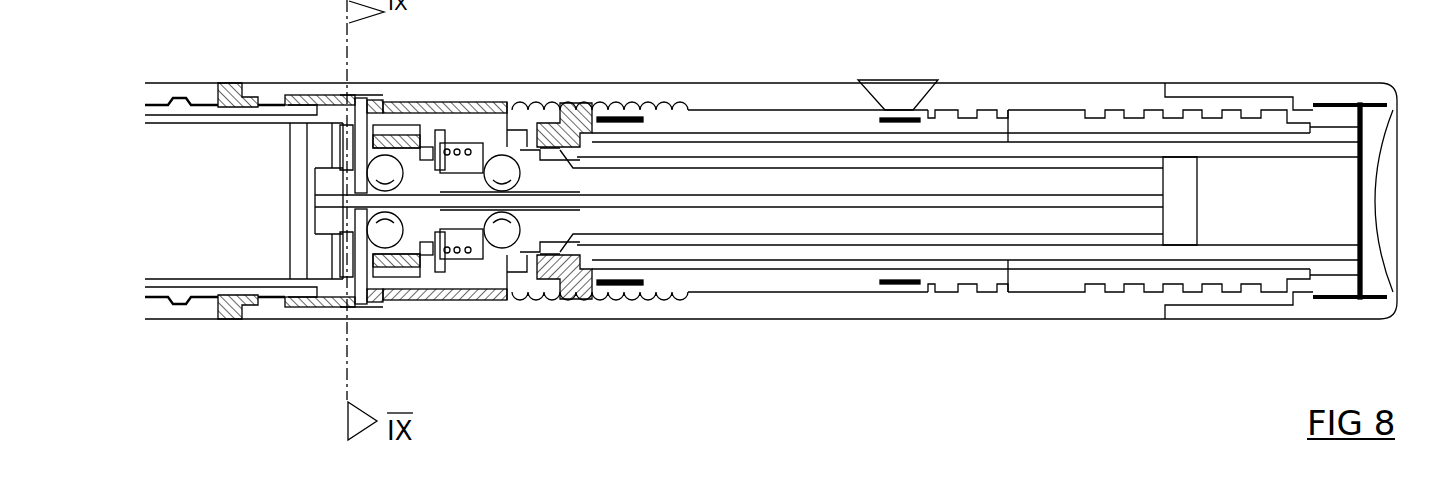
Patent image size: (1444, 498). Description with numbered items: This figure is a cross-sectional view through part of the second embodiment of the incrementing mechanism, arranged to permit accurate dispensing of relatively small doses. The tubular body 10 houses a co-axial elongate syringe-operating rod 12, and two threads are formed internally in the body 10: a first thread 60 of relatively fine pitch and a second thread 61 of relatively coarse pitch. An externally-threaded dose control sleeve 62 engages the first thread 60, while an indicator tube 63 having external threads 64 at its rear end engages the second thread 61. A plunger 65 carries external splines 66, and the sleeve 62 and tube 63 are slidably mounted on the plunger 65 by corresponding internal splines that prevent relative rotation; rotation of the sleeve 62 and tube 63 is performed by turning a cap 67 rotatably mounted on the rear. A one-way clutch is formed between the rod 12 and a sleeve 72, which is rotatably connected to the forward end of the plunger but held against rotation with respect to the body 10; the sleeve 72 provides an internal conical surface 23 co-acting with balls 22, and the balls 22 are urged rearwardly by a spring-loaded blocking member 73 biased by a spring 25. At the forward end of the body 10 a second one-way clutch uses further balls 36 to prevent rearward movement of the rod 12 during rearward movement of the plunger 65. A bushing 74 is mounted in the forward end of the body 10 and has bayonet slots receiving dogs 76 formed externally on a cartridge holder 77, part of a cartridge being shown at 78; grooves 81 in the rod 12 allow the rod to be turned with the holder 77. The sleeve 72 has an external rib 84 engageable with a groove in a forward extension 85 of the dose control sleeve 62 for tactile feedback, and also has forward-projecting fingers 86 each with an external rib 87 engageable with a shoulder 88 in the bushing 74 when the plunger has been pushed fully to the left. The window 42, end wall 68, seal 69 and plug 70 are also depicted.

The tubular body 10 is at (1043, 90).
The syringe-operating rod 12 is at (928, 215).
The balls 22 is at (506, 165).
The conical surfaces 23 is at (497, 250).
The spring 25 is at (460, 250).
The further balls 36 is at (383, 232).
The window 42 is at (882, 93).
The first thread 60 is at (657, 103).
The second thread 61 is at (1003, 110).
The dose control sleeve 62 is at (600, 103).
The indicator tube 63 is at (760, 130).
The external threads 64 is at (970, 110).
The plunger 65 is at (1040, 245).
The external splines 66 is at (1093, 140).
The cap 67 is at (1213, 90).
The end wall 68 is at (1372, 153).
The end cap seal 69 is at (1333, 118).
The plug 70 is at (1182, 218).
The sleeve 72 is at (488, 127).
The spring-loaded blocking member 73 is at (465, 173).
The bushing 74 is at (228, 85).
The dogs 76 is at (270, 300).
The cartridge holder 77 is at (205, 300).
The cartridge 78 is at (165, 123).
The grooves 81 is at (773, 205).
The external rib 84 is at (527, 250).
The forward extension 85 is at (515, 130).
The forward-projecting fingers 86 is at (407, 273).
The external rib 87 is at (383, 117).
The shoulder 88 is at (400, 102).